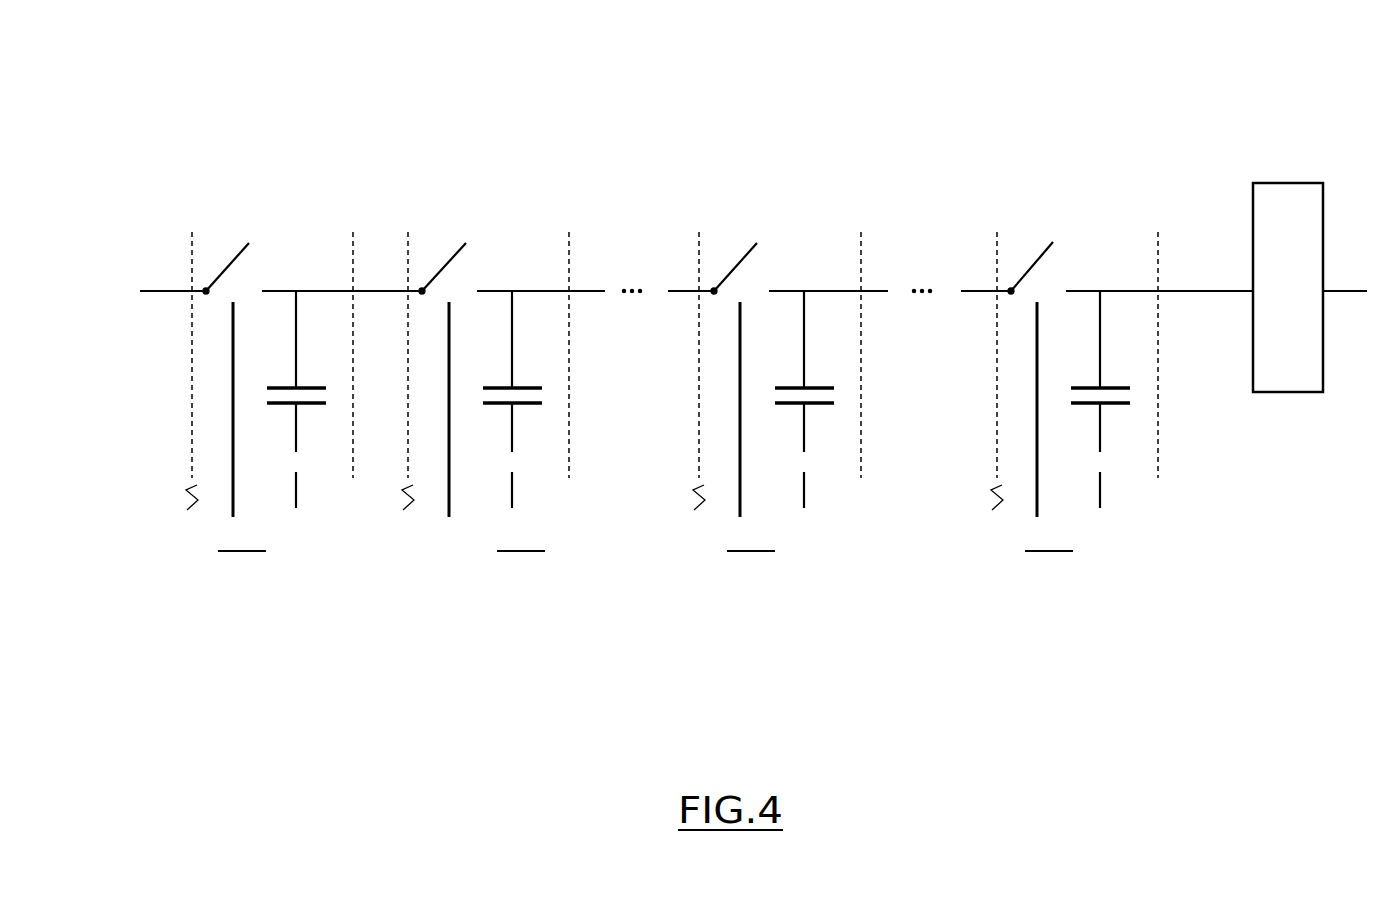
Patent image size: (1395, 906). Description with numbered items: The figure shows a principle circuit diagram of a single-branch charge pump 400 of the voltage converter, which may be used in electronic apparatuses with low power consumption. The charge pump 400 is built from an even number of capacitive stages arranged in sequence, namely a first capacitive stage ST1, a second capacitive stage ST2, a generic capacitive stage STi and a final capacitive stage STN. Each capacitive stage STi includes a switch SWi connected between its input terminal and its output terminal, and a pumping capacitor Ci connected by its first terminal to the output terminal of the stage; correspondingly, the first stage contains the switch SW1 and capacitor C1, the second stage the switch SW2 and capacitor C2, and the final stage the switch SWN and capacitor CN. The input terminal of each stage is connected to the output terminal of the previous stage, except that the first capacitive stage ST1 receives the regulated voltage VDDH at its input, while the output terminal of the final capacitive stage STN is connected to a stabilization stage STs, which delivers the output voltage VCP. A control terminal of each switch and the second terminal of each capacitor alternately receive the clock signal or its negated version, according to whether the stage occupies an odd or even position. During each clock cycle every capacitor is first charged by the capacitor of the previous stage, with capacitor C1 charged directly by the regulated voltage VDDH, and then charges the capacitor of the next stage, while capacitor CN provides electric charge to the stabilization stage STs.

The single-branch charge pump 400 is at (440, 73).
The switch SW1 is at (232, 248).
The switch SW2 is at (430, 248).
The switch SWi is at (723, 248).
The switch SWN is at (1030, 248).
The pumping capacitor C1 is at (300, 399).
The pumping capacitor C2 is at (516, 399).
The pumping capacitor Ci is at (806, 399).
The pumping capacitor CN is at (1105, 399).
The first capacitive stage ST1 is at (172, 388).
The capacitive stage ST2 is at (388, 388).
The capacitive stage STi is at (679, 388).
The final capacitive stage STN is at (977, 388).
The regulated voltage VDDH is at (159, 276).
The charge pump output voltage VCP is at (1349, 275).
The stabilization stage STs is at (1288, 287).